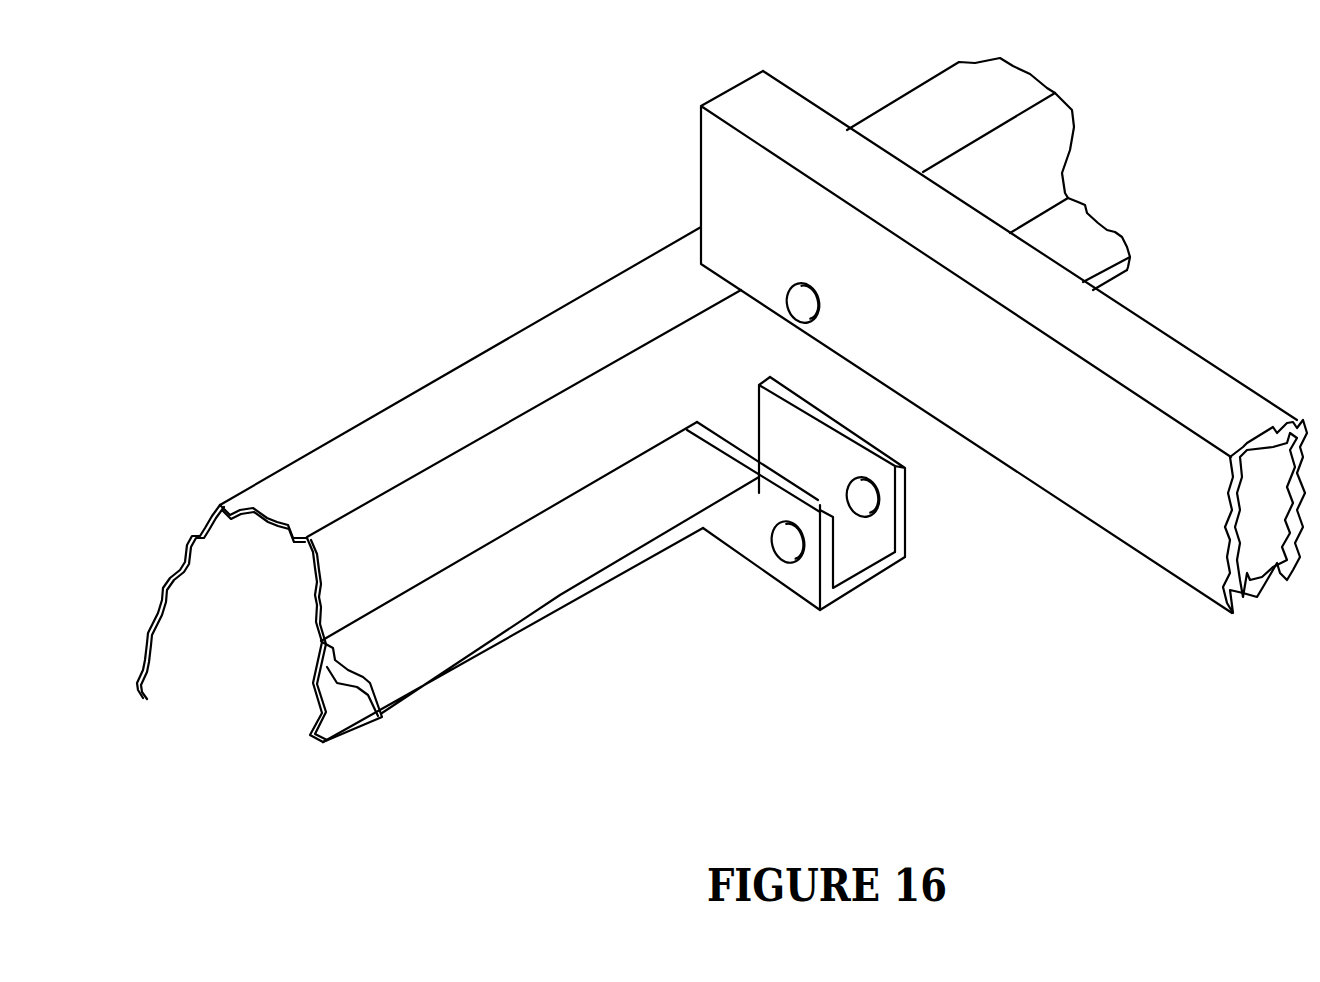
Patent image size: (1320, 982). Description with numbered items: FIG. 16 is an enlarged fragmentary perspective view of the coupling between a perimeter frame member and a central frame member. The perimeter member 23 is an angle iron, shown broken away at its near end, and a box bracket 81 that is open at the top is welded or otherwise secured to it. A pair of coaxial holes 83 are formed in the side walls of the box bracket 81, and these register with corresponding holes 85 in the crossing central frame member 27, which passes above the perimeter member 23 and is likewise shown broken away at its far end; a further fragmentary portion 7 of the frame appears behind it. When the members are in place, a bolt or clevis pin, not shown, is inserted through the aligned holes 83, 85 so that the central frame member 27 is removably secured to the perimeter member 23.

The frame member 7 is at (985, 163).
The perimeter frame member 23 is at (623, 537).
The transverse beam 27 is at (1182, 382).
The box bracket 81 is at (857, 587).
The coaxial holes 83 is at (880, 494).
The holes 85 is at (820, 307).